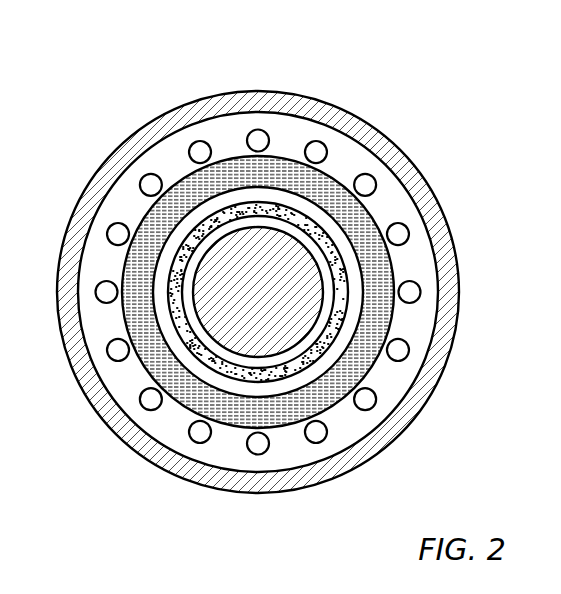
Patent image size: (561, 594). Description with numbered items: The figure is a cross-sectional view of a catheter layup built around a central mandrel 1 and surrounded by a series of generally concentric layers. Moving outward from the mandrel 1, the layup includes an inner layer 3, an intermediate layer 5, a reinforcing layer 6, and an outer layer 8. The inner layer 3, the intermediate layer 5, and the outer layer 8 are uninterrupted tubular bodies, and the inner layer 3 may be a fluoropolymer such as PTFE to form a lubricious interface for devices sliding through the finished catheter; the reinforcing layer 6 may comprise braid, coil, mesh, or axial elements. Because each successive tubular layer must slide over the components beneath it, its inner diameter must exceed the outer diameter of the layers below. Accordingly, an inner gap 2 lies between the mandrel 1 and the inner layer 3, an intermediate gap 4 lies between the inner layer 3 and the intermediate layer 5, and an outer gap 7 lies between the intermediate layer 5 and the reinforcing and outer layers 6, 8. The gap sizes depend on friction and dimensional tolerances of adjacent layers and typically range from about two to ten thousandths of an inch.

The mandrel 1 is at (212, 278).
The inner gap 2 is at (223, 230).
The inner layer 3 is at (250, 207).
The intermediate gap 4 is at (282, 193).
The intermediate layer 5 is at (335, 193).
The reinforcing layer 6 is at (366, 183).
The outer gap 7 is at (422, 332).
The outer layer 8 is at (432, 370).